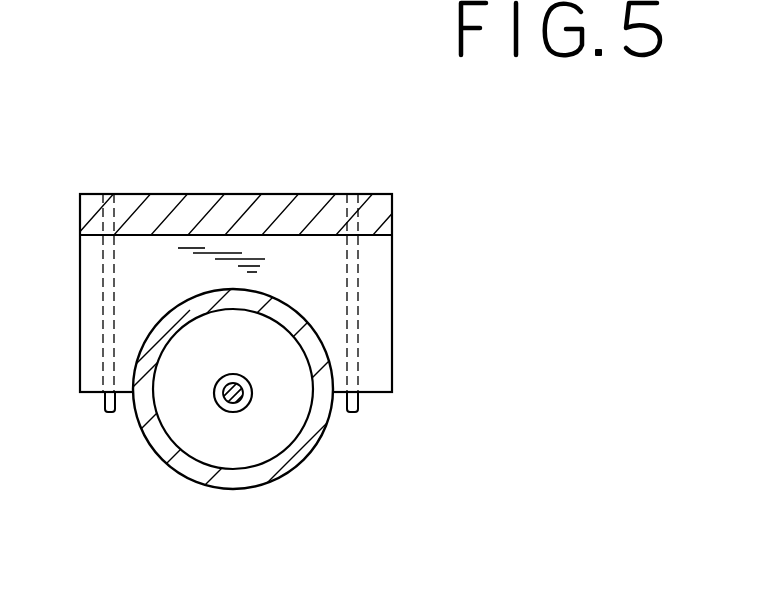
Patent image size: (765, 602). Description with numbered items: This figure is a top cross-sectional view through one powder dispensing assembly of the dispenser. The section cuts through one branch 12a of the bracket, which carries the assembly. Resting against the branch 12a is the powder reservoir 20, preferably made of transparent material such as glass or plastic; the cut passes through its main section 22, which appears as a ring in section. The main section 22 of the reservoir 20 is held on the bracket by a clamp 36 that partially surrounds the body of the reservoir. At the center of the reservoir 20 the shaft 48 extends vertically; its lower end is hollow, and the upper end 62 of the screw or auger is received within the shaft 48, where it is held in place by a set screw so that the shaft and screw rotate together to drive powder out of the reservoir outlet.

The branch 12a is at (280, 208).
The clamp 36 is at (377, 323).
The powder reservoir 20 is at (332, 433).
The main section 22 is at (142, 431).
The shaft 48 is at (222, 409).
The upper end 62 is at (240, 398).